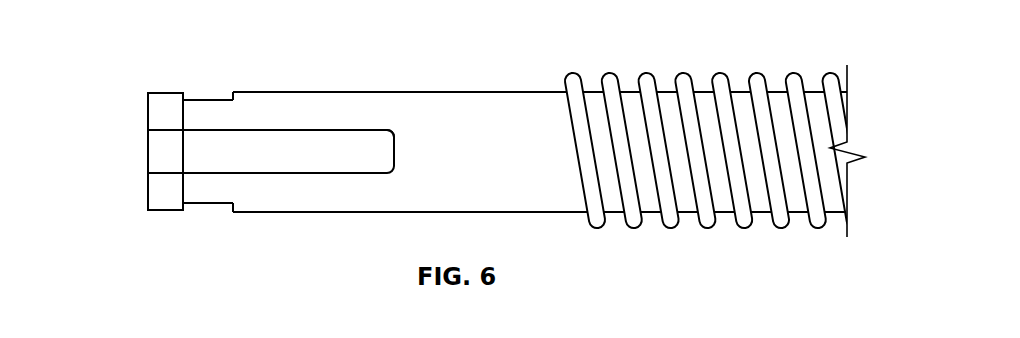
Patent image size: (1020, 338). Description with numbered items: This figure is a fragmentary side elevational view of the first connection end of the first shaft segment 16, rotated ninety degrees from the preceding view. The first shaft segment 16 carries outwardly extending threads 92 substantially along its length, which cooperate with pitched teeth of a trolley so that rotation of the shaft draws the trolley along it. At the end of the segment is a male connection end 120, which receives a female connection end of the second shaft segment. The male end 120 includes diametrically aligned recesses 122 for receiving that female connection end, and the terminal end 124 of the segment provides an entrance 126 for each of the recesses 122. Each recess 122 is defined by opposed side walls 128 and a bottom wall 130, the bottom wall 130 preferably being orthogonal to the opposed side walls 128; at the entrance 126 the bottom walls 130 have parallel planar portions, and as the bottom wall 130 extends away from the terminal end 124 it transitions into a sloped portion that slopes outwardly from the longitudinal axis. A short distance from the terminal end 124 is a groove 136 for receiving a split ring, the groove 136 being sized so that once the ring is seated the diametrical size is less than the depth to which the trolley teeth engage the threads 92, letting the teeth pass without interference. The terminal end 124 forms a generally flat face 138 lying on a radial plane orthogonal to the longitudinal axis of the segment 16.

The first shaft segment 16 is at (403, 72).
The threads 92 is at (717, 75).
The male connection end 120 is at (158, 199).
The recess 122 is at (338, 163).
The terminal end 124 is at (143, 199).
The entrance 126 is at (144, 155).
The opposed side wall 128 is at (296, 131).
The bottom wall 130 is at (328, 138).
The groove 136 is at (213, 204).
The flat face 138 is at (147, 113).